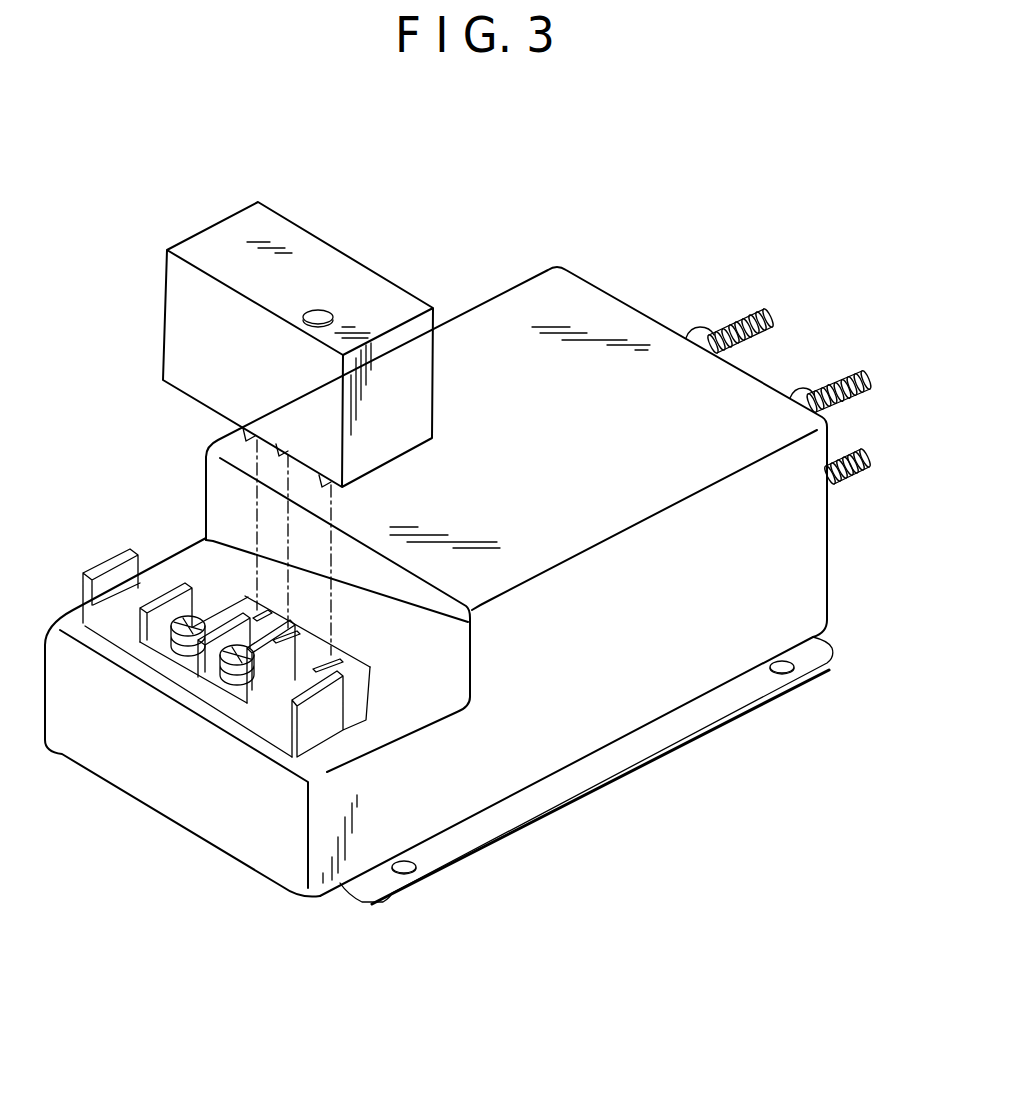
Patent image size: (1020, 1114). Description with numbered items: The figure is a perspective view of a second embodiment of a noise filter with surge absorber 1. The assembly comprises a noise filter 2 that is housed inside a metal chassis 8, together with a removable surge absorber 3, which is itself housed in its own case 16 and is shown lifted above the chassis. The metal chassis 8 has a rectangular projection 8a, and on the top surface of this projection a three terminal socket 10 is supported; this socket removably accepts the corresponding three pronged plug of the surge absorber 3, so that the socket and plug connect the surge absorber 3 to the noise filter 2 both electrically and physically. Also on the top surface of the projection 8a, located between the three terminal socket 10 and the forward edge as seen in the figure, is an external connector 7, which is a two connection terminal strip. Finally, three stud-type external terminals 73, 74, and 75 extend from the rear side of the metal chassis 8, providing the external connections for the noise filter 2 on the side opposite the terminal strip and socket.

The noise filter with surge absorber 1 is at (712, 134).
The noise filter 2 is at (557, 265).
The surge absorber 3 is at (266, 205).
The external connector 7 is at (270, 732).
The metal chassis 8 is at (668, 672).
The rectangular projection 8a is at (292, 895).
The three terminal socket 10 is at (365, 672).
The case 16 is at (185, 337).
The stud-type external terminal 73 is at (760, 312).
The stud-type external terminal 74 is at (868, 452).
The stud-type external terminal 75 is at (855, 372).